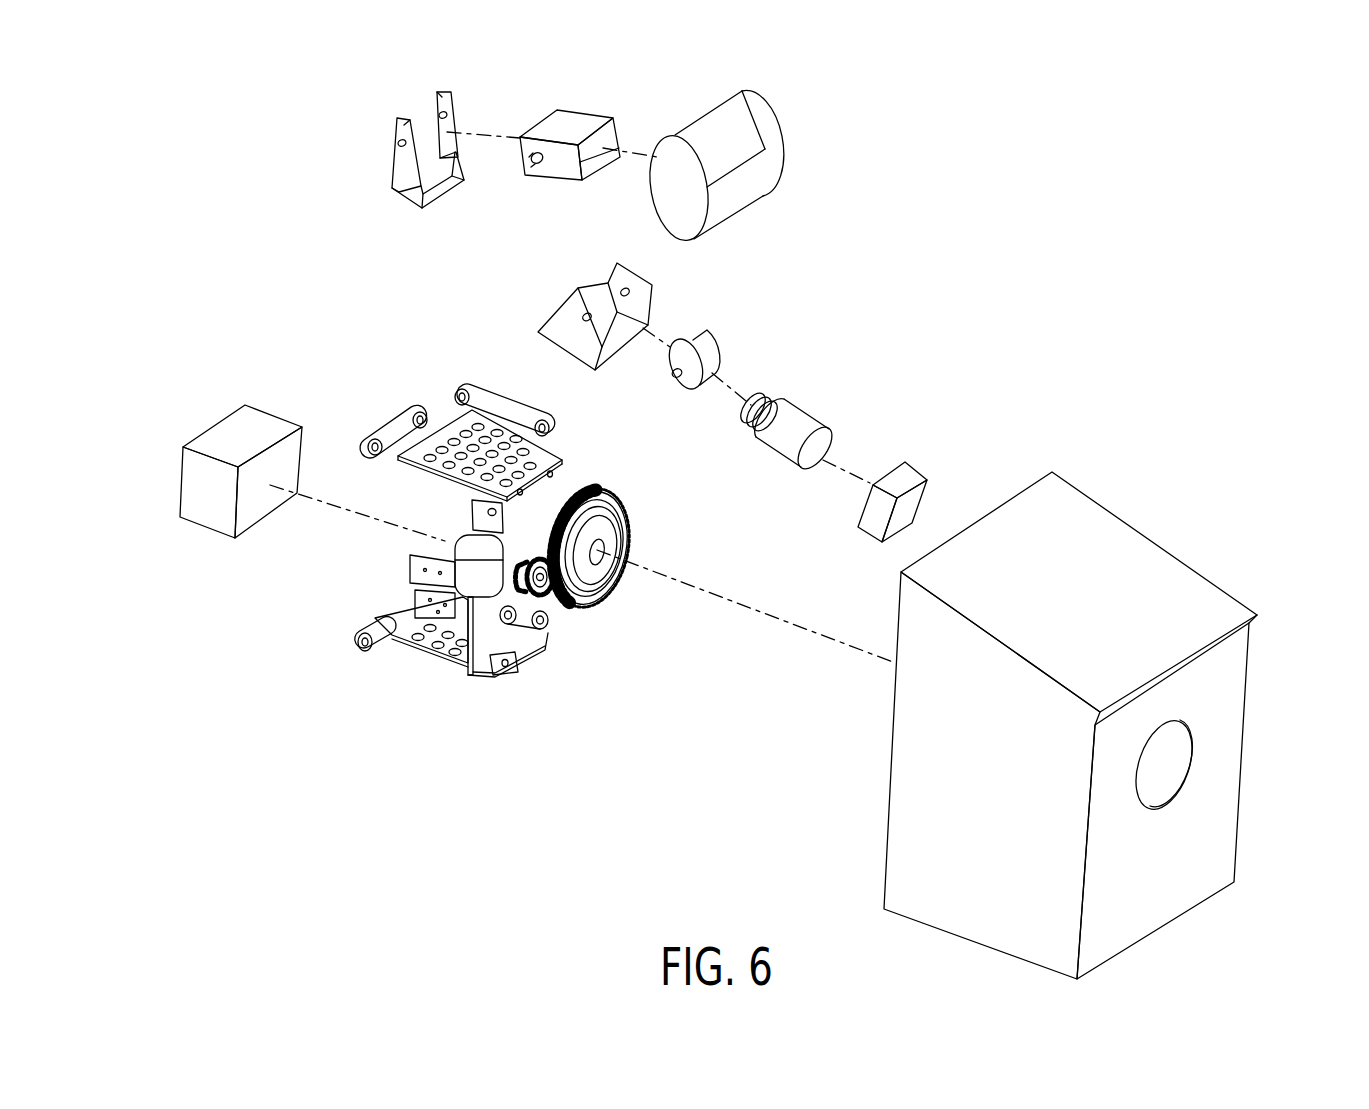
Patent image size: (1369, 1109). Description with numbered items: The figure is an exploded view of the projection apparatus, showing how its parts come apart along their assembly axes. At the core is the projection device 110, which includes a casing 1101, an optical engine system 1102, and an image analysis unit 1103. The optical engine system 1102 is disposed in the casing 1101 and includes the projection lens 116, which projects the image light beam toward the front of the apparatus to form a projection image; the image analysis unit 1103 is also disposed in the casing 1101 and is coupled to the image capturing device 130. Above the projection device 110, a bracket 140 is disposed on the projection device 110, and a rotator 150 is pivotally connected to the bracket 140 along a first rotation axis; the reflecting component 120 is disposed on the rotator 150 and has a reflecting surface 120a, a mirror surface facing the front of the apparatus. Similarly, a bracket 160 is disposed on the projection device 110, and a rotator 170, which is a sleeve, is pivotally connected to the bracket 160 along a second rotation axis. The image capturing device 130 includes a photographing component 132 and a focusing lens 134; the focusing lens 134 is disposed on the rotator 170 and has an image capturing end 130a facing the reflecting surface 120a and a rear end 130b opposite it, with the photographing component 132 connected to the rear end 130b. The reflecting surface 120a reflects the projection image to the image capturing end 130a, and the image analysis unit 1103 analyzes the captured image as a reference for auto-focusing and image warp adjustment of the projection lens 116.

The projection device 110 is at (1111, 725).
The casing 1101 is at (1221, 745).
The optical engine system 1102 is at (512, 503).
The image analysis unit 1103 is at (233, 430).
The projection lens 116 is at (598, 553).
The reflecting component 120 is at (765, 113).
The reflecting surface 120a is at (725, 140).
The image capturing device 130 is at (844, 440).
The image capturing end 130a is at (745, 411).
The rear end 130b is at (820, 467).
The photographing component 132 is at (920, 477).
The focusing lens 134 is at (810, 427).
The bracket 140 is at (405, 178).
The rotator 150 is at (562, 165).
The bracket 160 is at (560, 322).
The rotator 170 is at (708, 365).